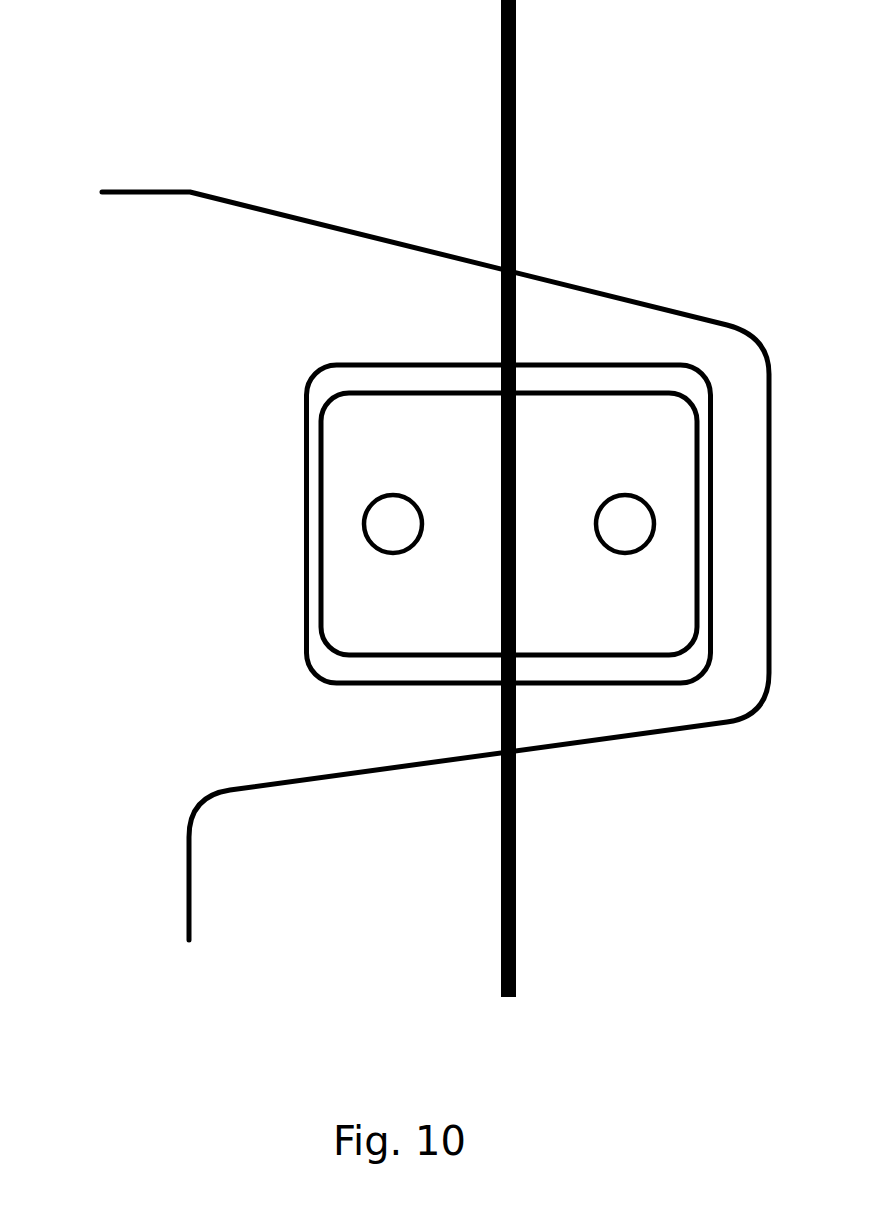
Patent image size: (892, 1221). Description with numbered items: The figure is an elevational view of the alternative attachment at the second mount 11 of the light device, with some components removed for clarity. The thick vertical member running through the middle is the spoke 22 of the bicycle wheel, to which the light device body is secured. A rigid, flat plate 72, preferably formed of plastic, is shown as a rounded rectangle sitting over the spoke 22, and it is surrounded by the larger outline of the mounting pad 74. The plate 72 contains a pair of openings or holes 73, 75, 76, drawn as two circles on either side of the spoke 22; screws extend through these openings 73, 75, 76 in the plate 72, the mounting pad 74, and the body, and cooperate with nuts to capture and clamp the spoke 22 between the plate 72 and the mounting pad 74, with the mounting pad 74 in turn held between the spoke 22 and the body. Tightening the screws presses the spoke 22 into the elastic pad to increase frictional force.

The second mount 11 is at (452, 307).
The spoke 22 is at (517, 160).
The plate 72 is at (377, 393).
The mounting pad 74 is at (337, 364).
The opening 73 is at (363, 512).
The opening 75 is at (365, 513).
The opening 76 is at (365, 513).